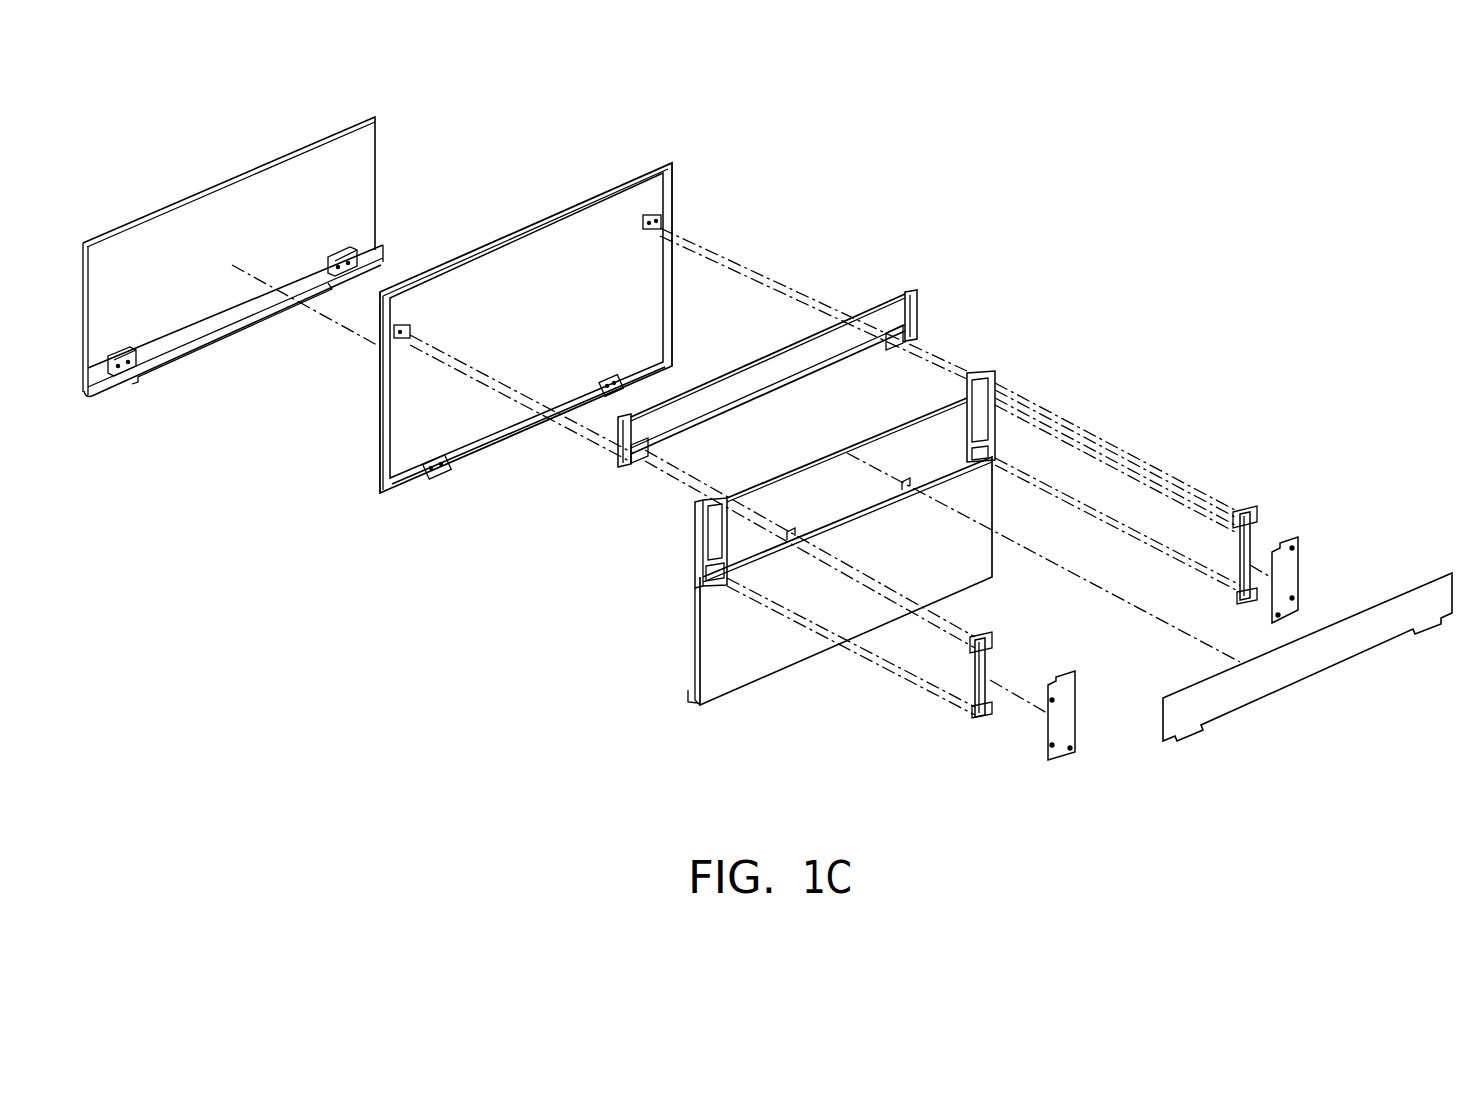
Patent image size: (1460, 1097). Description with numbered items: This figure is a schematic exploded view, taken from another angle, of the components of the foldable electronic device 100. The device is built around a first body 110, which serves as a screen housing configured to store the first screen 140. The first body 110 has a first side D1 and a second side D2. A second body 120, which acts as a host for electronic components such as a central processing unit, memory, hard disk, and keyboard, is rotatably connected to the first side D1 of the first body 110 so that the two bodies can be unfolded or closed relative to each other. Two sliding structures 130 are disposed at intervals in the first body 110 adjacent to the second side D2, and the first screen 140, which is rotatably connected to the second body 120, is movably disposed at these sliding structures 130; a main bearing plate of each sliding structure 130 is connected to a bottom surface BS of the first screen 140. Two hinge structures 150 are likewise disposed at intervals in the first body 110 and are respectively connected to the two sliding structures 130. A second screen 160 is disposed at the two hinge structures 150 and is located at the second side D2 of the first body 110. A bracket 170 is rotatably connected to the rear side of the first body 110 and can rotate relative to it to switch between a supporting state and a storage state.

The foldable electronic device 100 is at (1453, 827).
The first body 110 is at (690, 700).
The second body 120 is at (357, 188).
The sliding structure 130 is at (1255, 545).
The first screen 140 is at (605, 222).
The hinge structure 150 is at (1240, 510).
The second screen 160 is at (893, 318).
The bracket 170 is at (755, 643).
The first side D1 is at (688, 681).
The second side D2 is at (932, 394).
The bottom surface BS is at (420, 423).